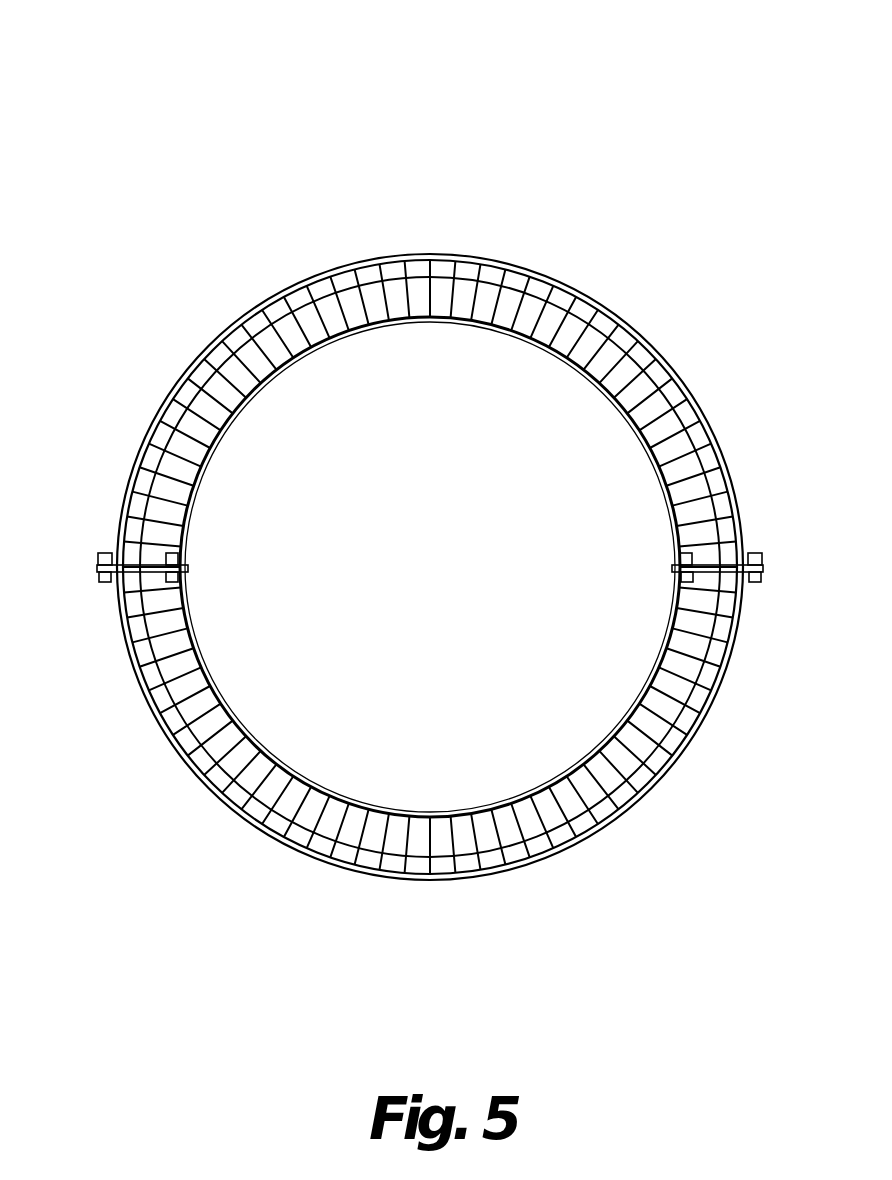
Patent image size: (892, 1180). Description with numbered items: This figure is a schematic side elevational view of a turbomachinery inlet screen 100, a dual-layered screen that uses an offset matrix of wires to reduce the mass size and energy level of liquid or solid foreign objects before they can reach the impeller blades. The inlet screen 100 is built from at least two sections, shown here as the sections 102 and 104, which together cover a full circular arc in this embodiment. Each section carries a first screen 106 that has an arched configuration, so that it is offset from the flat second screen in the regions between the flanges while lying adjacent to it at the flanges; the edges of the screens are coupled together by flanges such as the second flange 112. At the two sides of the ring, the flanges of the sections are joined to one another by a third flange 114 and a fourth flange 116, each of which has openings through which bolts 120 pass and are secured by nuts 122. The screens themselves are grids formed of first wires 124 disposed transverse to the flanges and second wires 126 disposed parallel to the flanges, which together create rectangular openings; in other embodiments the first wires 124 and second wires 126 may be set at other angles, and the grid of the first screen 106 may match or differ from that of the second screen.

The inlet screen 100 is at (655, 108).
The section 102 is at (415, 358).
The section 104 is at (497, 777).
The first screen 106 is at (500, 258).
The second flange 112 is at (272, 382).
The third flange 114 is at (148, 562).
The fourth flange 116 is at (725, 560).
The bolt 120 is at (190, 540).
The nut 122 is at (195, 582).
The first wire 124 is at (330, 310).
The second wire 126 is at (253, 305).